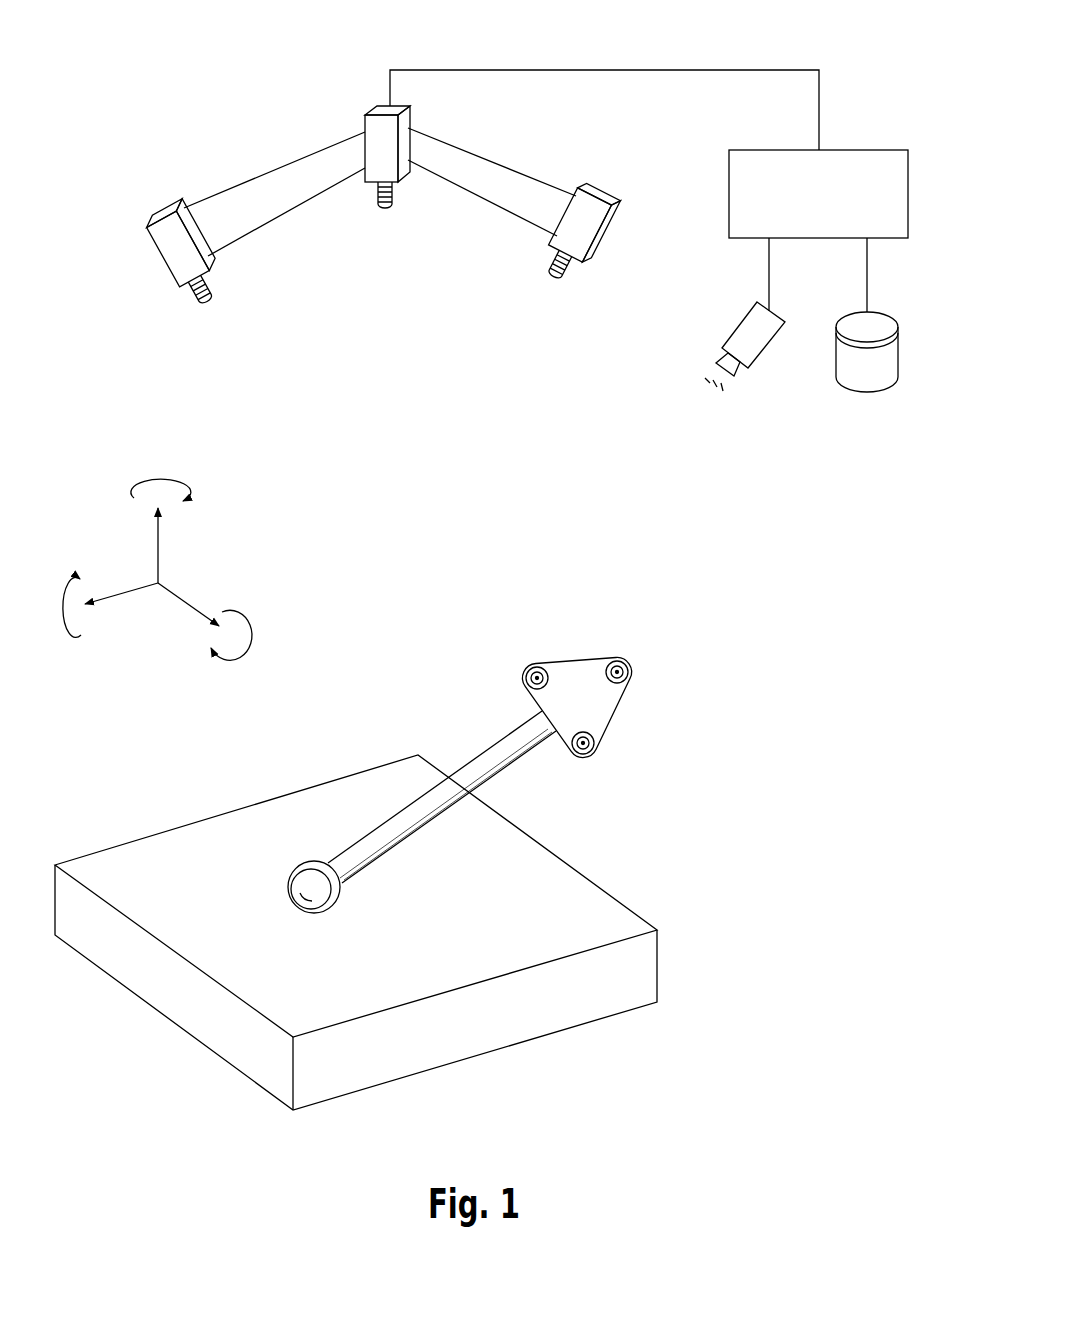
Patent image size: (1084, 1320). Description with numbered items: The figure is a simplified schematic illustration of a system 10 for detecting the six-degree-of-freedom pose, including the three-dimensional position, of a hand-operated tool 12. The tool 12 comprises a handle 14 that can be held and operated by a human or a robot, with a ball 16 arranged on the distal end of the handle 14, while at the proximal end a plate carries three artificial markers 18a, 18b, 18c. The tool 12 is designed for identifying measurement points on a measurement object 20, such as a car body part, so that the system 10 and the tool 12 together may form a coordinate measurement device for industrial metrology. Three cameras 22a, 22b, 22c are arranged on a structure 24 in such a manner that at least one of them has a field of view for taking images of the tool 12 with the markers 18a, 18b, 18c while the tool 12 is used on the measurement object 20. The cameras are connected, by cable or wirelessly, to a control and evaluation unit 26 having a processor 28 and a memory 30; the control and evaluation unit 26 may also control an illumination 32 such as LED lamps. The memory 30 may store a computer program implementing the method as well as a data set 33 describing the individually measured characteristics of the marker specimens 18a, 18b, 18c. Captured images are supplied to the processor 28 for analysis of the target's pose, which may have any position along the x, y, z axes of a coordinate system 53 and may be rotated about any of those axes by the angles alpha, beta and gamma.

The system 10 is at (126, 117).
The hand-operated tool 12 is at (444, 659).
The handle 14 is at (433, 823).
The ball 16 is at (342, 898).
The artificial marker 18a is at (533, 669).
The artificial marker 18b is at (627, 677).
The artificial marker 18c is at (593, 751).
The measurement object 20 is at (557, 1018).
The camera 22a is at (370, 130).
The camera 22b is at (170, 250).
The camera 22c is at (600, 228).
The structure 24 is at (268, 192).
The control and evaluation unit 26 is at (840, 96).
The processor 28 is at (867, 163).
The memory 30 is at (900, 381).
The illumination 32 is at (757, 340).
The data set 33 is at (890, 338).
The coordinate system 53 is at (226, 540).